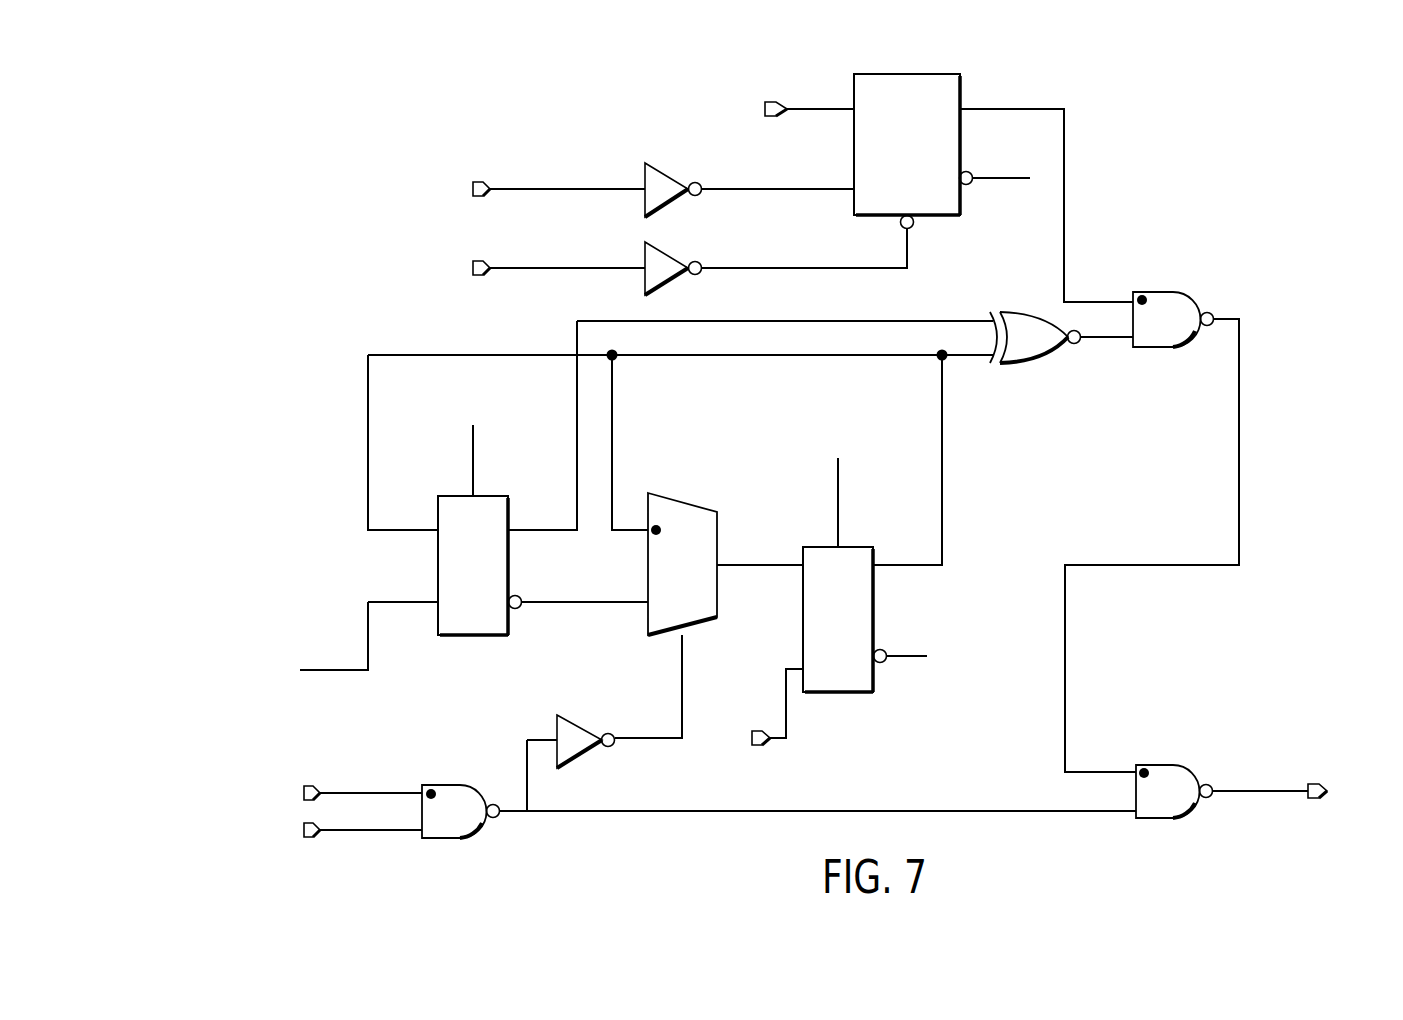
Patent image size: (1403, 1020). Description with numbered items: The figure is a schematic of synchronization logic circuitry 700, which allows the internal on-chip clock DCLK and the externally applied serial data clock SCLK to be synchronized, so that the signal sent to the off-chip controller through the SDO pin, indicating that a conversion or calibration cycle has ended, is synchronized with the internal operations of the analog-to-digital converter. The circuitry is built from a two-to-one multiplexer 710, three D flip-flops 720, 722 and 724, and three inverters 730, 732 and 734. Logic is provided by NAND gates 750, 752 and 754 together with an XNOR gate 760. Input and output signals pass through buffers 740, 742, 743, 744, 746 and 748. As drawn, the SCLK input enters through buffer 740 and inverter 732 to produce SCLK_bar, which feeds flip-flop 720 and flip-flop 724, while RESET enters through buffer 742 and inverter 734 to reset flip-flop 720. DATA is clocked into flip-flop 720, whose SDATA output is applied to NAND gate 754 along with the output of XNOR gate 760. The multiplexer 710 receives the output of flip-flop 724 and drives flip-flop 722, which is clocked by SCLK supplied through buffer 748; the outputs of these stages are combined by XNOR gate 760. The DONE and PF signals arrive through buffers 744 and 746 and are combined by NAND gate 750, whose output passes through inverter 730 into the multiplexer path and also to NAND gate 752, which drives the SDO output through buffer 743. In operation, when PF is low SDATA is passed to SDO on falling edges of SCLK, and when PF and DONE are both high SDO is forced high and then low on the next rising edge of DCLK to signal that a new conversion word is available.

The synchronization logic circuitry 700 is at (540, 97).
The 2-1 multiplexer 710 is at (704, 577).
The D flipflop 720 is at (930, 162).
The D flipflop 722 is at (860, 629).
The D flipflop 724 is at (495, 577).
The inverter 730 is at (582, 723).
The inverter 732 is at (672, 163).
The inverter 734 is at (673, 260).
The buffer 740 is at (483, 182).
The buffer 742 is at (483, 261).
The buffer 743 is at (1320, 784).
The buffer 744 is at (315, 786).
The buffer 746 is at (315, 837).
The buffer 748 is at (760, 731).
The NAND gate 750 is at (450, 785).
The NAND gate 752 is at (1163, 765).
The NAND gate 754 is at (1160, 292).
The XNOR gate 760 is at (1032, 364).